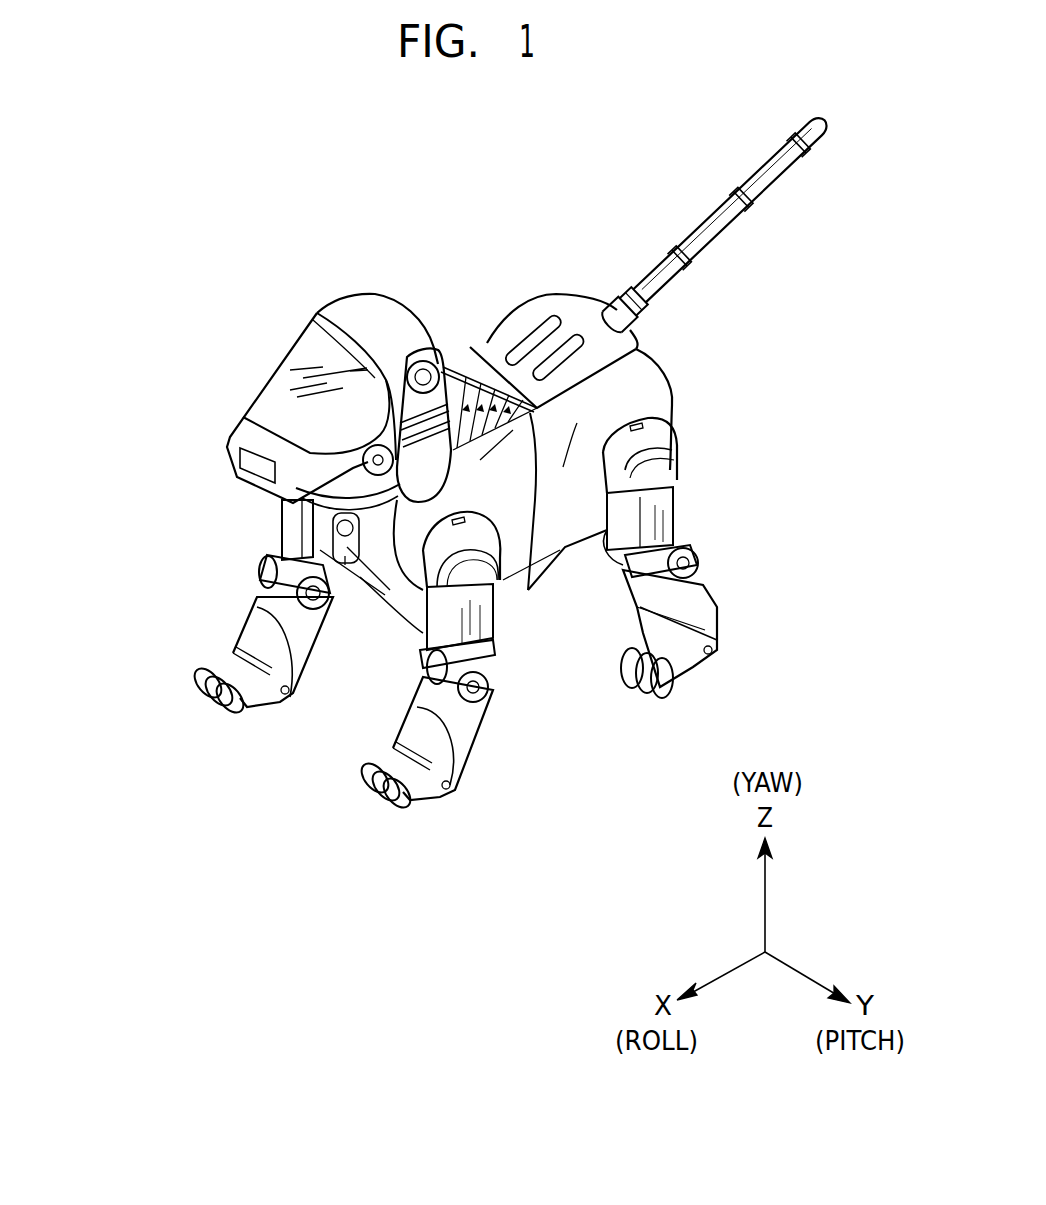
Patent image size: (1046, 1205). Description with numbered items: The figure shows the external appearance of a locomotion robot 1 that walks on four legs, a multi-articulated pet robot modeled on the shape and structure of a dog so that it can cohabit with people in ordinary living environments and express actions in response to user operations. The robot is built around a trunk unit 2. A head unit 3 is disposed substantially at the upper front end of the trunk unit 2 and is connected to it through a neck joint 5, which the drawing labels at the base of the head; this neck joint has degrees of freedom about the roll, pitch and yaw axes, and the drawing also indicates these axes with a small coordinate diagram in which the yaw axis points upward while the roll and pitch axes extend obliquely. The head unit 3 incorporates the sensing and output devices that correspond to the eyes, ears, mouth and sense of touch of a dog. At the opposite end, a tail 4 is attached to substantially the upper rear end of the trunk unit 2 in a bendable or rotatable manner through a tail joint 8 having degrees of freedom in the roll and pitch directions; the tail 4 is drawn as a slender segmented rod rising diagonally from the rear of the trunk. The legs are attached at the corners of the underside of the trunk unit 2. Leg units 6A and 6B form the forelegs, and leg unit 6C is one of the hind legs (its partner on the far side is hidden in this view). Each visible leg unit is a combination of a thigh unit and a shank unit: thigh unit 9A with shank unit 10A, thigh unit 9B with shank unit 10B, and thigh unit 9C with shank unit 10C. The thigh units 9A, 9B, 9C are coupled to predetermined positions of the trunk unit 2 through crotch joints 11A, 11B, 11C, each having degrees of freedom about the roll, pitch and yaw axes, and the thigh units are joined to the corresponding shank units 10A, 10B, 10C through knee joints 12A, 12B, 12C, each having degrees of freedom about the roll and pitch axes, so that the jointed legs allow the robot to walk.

The locomotion robot 1 is at (275, 812).
The trunk unit 2 is at (484, 365).
The head unit 3 is at (367, 298).
The tail 4 is at (713, 233).
The neck joint 5 is at (407, 613).
The leg unit 6A is at (92, 455).
The leg unit 6B is at (584, 690).
The leg unit 6C is at (808, 390).
The tail joint 8 is at (618, 302).
The thigh unit 9A is at (262, 540).
The thigh unit 9B is at (516, 584).
The thigh unit 9C is at (660, 507).
The shank unit 10A is at (250, 641).
The shank unit 10B is at (470, 790).
The shank unit 10C is at (693, 608).
The crotch joint 11A is at (286, 506).
The crotch joint 11B is at (494, 616).
The crotch joint 11C is at (663, 467).
The knee joint 12A is at (270, 590).
The knee joint 12B is at (477, 755).
The knee joint 12C is at (700, 564).